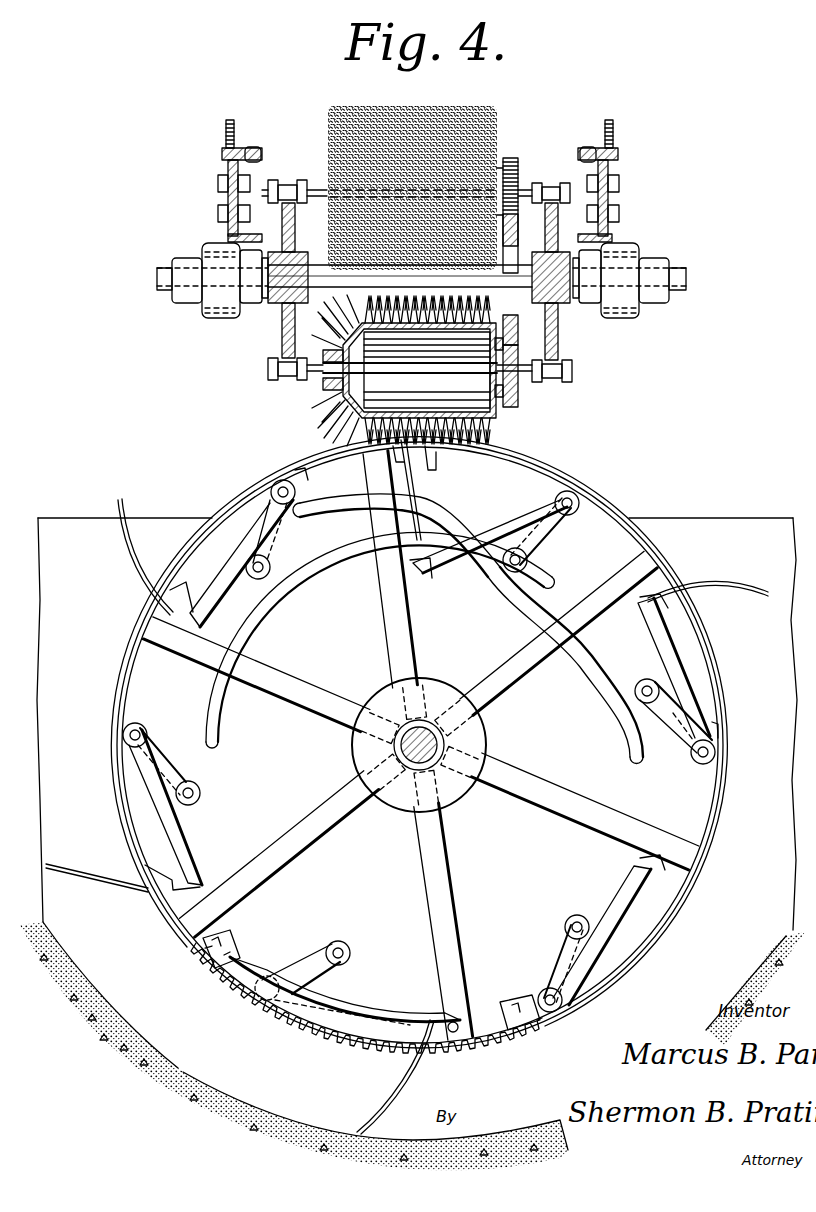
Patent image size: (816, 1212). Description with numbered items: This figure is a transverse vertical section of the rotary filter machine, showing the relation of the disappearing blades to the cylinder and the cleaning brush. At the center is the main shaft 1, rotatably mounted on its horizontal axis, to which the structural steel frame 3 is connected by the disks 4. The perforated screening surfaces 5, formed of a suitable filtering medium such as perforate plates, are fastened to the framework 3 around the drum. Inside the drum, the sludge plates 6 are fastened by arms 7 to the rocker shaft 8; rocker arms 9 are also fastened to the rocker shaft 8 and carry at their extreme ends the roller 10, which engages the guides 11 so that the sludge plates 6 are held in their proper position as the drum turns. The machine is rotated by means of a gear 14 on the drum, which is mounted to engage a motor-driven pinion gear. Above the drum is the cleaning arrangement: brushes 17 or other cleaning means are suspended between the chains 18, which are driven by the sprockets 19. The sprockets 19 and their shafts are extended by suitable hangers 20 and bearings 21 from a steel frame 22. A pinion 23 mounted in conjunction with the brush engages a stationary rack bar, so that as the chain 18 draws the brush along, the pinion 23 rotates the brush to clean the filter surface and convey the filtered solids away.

The main shaft 1 is at (424, 746).
The structural steel frame 3 is at (296, 690).
The disks 4 is at (487, 724).
The perforated screening surfaces 5 is at (122, 670).
The sludge plates 6 is at (148, 572).
The arms 7 is at (222, 562).
The rocker shaft 8 is at (297, 493).
The rocker arms 9 is at (276, 555).
The roller 10 is at (530, 574).
The guides 11 is at (468, 524).
The gear 14 is at (334, 1047).
The brushes 17 is at (488, 128).
The chains 18 is at (290, 179).
The sprockets 19 is at (289, 247).
The hangers 20 is at (246, 237).
The bearings 21 is at (176, 271).
The steel frame 22 is at (268, 193).
The pinion 23 is at (528, 156).